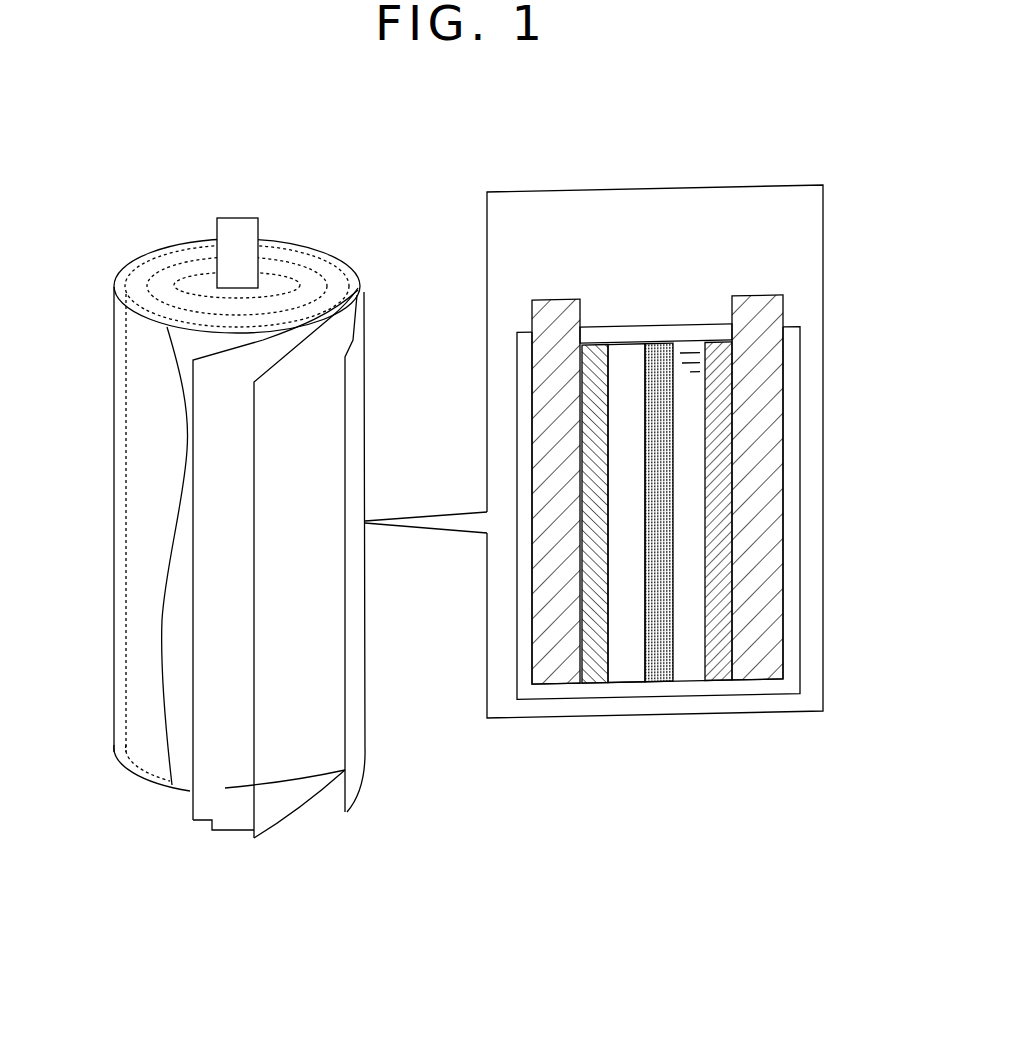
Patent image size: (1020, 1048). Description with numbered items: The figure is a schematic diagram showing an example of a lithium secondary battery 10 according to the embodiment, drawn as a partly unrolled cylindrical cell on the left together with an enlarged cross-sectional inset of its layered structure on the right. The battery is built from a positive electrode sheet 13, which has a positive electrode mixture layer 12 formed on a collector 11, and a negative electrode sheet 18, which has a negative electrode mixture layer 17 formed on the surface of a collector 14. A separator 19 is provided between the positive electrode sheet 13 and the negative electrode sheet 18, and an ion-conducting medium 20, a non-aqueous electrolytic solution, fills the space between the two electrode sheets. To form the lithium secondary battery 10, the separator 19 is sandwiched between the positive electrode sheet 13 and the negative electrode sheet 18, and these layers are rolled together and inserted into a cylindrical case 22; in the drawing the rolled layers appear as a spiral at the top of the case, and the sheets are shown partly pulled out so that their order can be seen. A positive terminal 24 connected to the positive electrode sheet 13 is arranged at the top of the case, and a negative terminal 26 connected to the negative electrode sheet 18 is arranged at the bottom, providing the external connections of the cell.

The lithium secondary battery 10 is at (305, 197).
The collector 11 is at (556, 491).
The positive electrode mixture layer 12 is at (595, 514).
The positive electrode sheet 13 is at (362, 745).
The collector 14 is at (757, 487).
The negative electrode mixture layer 17 is at (718, 511).
The negative electrode sheet 18 is at (320, 792).
The separator 19 is at (302, 765).
The ion-conducting medium 20 is at (626, 513).
The cylindrical case 22 is at (148, 258).
The positive terminal 24 is at (235, 217).
The negative terminal 26 is at (232, 831).